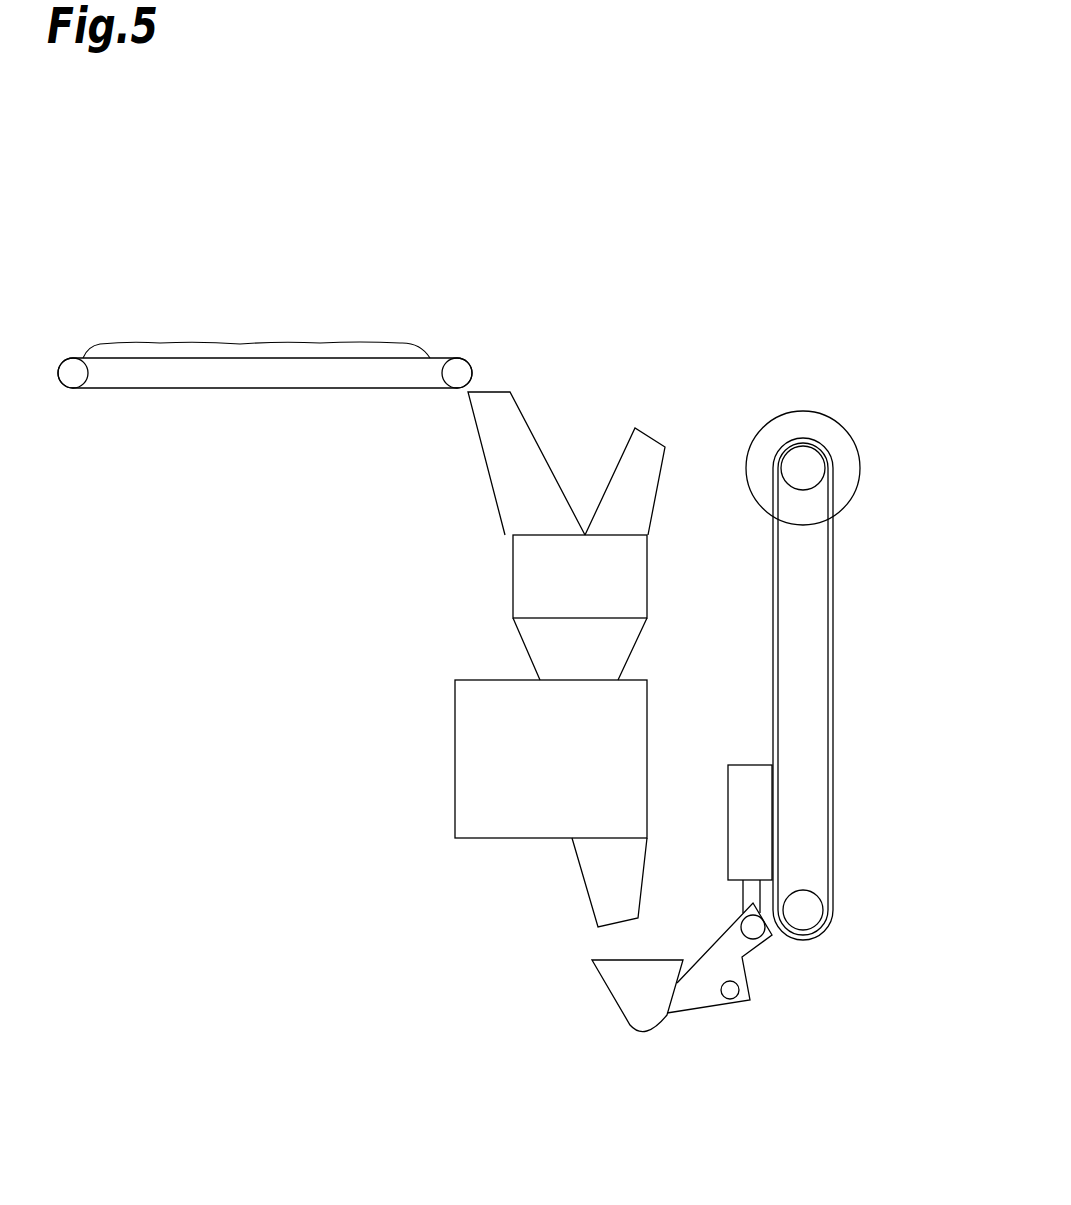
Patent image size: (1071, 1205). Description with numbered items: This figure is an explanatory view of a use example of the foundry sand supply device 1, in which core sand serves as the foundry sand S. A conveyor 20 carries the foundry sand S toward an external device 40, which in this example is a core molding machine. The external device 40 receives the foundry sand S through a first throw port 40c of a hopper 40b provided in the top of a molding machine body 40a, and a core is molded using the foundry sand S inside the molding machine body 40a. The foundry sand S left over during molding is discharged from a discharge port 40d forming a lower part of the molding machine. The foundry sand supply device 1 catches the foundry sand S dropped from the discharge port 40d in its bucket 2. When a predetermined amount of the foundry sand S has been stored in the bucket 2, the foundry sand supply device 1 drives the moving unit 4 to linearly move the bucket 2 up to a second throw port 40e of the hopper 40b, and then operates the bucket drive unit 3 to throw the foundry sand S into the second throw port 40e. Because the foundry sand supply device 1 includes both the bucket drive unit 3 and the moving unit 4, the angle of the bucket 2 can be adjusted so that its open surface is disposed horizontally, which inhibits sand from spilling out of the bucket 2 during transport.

The foundry sand supply device 1 is at (890, 311).
The bucket 2 is at (645, 1036).
The bucket drive unit 3 is at (726, 762).
The moving unit 4 is at (848, 628).
The conveyor 20 is at (313, 395).
The foundry sand S is at (373, 345).
The external device 40 is at (452, 557).
The molding machine body 40a is at (453, 748).
The hopper 40b is at (512, 586).
The first throw port 40c is at (492, 390).
The discharge port 40d is at (620, 925).
The second throw port 40e is at (652, 440).